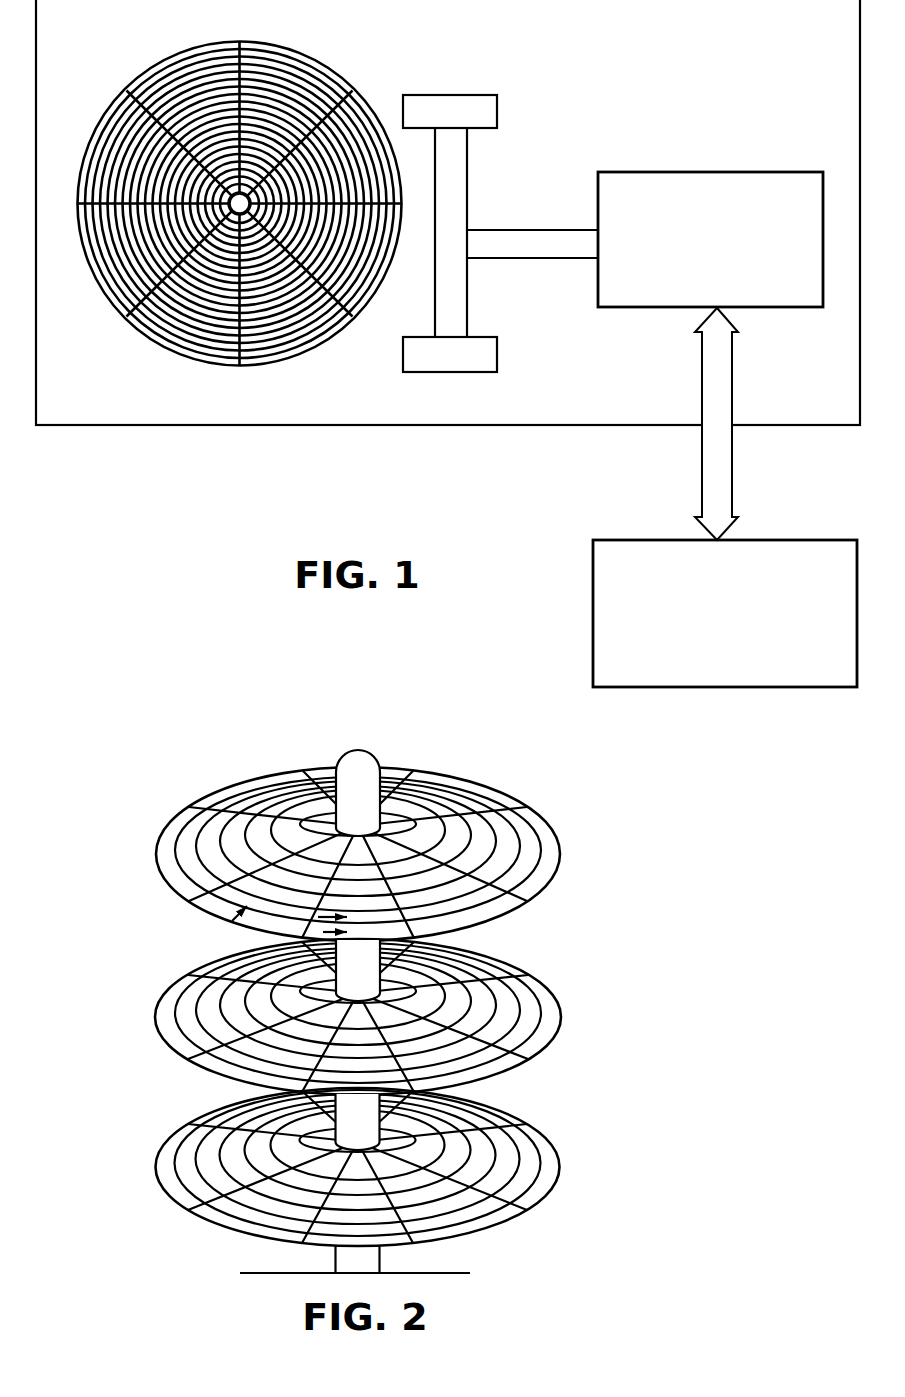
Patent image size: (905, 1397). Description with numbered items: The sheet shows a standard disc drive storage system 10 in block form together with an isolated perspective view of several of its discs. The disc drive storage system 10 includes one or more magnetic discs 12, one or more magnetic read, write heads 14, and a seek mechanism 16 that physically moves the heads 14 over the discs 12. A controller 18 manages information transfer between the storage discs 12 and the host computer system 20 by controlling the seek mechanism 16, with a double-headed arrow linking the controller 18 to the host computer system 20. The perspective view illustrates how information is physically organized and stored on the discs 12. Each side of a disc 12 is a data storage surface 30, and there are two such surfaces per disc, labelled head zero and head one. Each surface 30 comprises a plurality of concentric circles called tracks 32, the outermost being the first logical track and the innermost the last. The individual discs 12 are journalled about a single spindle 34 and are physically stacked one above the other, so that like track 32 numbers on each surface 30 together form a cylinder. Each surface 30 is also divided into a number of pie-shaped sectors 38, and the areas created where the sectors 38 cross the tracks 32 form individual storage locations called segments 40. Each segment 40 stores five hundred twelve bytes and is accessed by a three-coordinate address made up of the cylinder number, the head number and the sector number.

In FIG. 1, the disc drive storage system 10 is at (307, 444).
In FIG. 1, the magnetic disc 12 is at (293, 47).
In FIG. 2, the magnetic disc 12 is at (483, 783).
In FIG. 1, the magnetic read, write head 14 is at (455, 94).
In FIG. 1, the seek mechanism 16 is at (508, 230).
In FIG. 1, the controller 18 is at (710, 172).
In FIG. 1, the host computer system 20 is at (724, 688).
In FIG. 2, the data storage surface 30 is at (228, 803).
In FIG. 2, the track 32 is at (500, 805).
In FIG. 2, the spindle 34 is at (358, 760).
In FIG. 2, the sector 38 is at (252, 775).
In FIG. 2, the segment 40 is at (180, 852).